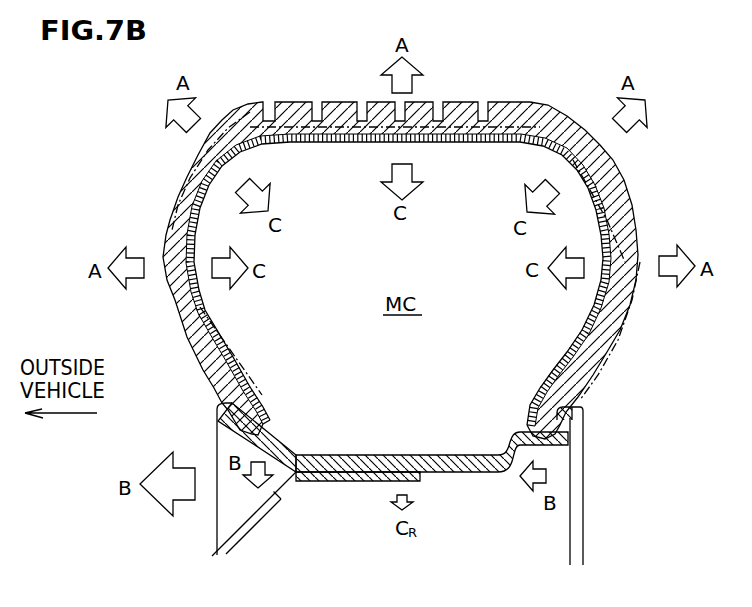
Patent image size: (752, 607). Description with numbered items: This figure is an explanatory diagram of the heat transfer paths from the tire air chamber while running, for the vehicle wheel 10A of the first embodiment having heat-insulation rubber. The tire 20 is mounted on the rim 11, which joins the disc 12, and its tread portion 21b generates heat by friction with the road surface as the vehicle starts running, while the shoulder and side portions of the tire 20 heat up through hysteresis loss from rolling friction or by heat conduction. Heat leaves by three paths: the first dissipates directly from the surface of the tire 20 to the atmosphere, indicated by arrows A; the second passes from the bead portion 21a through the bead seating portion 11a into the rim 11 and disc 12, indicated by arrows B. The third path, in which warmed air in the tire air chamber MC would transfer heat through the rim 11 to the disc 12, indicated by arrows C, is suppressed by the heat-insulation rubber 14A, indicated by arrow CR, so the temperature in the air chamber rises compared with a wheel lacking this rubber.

The tire 20 is at (553, 103).
The tread portion 21b is at (340, 102).
The bead portion 21a is at (250, 385).
The bead seating portion 11a is at (277, 410).
The rim 11 is at (353, 470).
The heat-insulation rubber 14A is at (467, 460).
The disc 12 is at (252, 523).
The vehicle wheel 10A is at (606, 515).